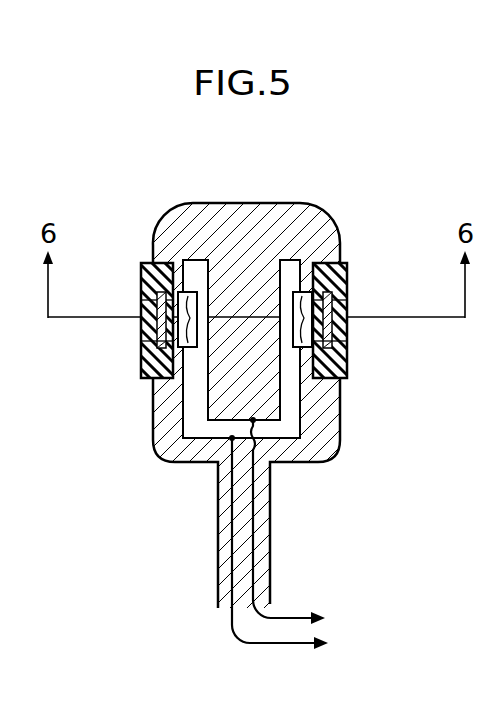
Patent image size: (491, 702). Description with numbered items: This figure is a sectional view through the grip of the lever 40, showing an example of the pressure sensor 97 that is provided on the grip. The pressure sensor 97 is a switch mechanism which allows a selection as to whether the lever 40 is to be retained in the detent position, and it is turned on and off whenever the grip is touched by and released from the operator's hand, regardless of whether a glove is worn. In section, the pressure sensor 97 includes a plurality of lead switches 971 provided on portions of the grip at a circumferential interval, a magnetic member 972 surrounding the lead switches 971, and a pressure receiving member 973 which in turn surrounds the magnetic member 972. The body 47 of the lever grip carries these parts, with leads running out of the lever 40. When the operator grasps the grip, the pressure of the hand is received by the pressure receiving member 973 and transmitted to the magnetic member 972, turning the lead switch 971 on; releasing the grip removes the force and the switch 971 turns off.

The lever 40 is at (285, 562).
The holder housing 47 is at (305, 216).
The pressure sensor 97 is at (135, 265).
The lead switch 971 is at (142, 330).
The magnetic member 972 is at (142, 298).
The pressure receiving member 973 is at (142, 362).